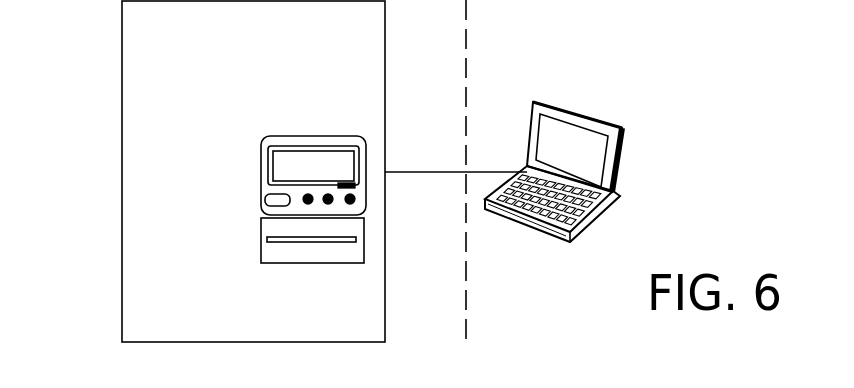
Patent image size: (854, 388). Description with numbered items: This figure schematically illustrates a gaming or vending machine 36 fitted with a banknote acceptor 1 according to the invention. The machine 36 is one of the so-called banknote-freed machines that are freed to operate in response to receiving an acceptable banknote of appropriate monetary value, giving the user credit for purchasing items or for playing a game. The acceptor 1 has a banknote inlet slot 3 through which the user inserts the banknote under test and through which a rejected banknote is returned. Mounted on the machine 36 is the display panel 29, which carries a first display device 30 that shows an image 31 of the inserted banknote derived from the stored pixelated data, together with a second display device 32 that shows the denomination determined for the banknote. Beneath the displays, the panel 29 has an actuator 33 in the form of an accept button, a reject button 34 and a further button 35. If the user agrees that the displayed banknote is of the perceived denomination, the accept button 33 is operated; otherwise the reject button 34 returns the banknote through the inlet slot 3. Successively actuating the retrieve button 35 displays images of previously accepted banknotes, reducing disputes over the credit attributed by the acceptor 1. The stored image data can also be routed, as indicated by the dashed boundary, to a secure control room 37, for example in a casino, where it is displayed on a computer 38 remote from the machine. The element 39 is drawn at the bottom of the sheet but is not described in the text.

The card reader 1 is at (315, 261).
The card slot 3 is at (345, 239).
The display frame 29 is at (328, 137).
The device housing 30 is at (362, 163).
The display screen 31 is at (337, 160).
The button 32 is at (260, 203).
The buttons 33 is at (306, 202).
The indicator 34 is at (355, 185).
The button 35 is at (352, 201).
The vending or gaming machine 36 is at (122, 152).
The communication link 37 is at (456, 171).
The computer 38 is at (623, 153).
The network 39 is at (511, 387).